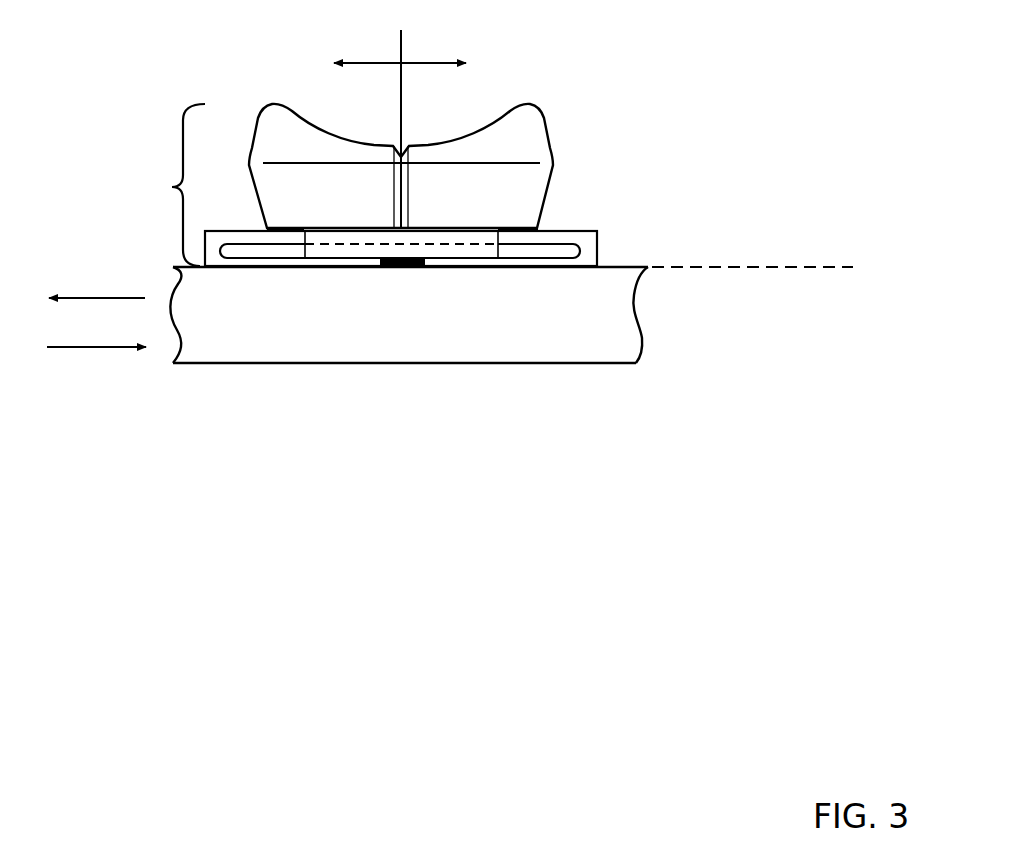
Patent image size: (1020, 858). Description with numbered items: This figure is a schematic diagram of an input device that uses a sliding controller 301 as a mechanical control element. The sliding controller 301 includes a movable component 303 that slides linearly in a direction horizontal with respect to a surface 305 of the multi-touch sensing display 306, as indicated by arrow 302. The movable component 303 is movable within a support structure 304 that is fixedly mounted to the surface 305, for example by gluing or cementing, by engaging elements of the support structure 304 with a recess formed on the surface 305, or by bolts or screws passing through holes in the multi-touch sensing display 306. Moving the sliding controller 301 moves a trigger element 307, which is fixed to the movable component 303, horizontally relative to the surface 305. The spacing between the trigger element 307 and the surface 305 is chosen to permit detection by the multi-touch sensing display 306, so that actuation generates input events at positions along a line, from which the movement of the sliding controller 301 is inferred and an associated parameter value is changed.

The sliding controller 301 is at (168, 187).
The arrow 302 is at (432, 63).
The movable component 303 is at (529, 104).
The support structure 304 is at (592, 238).
The surface 305 is at (692, 266).
The multi-touch sensing display 306 is at (399, 335).
The trigger element 307 is at (402, 266).